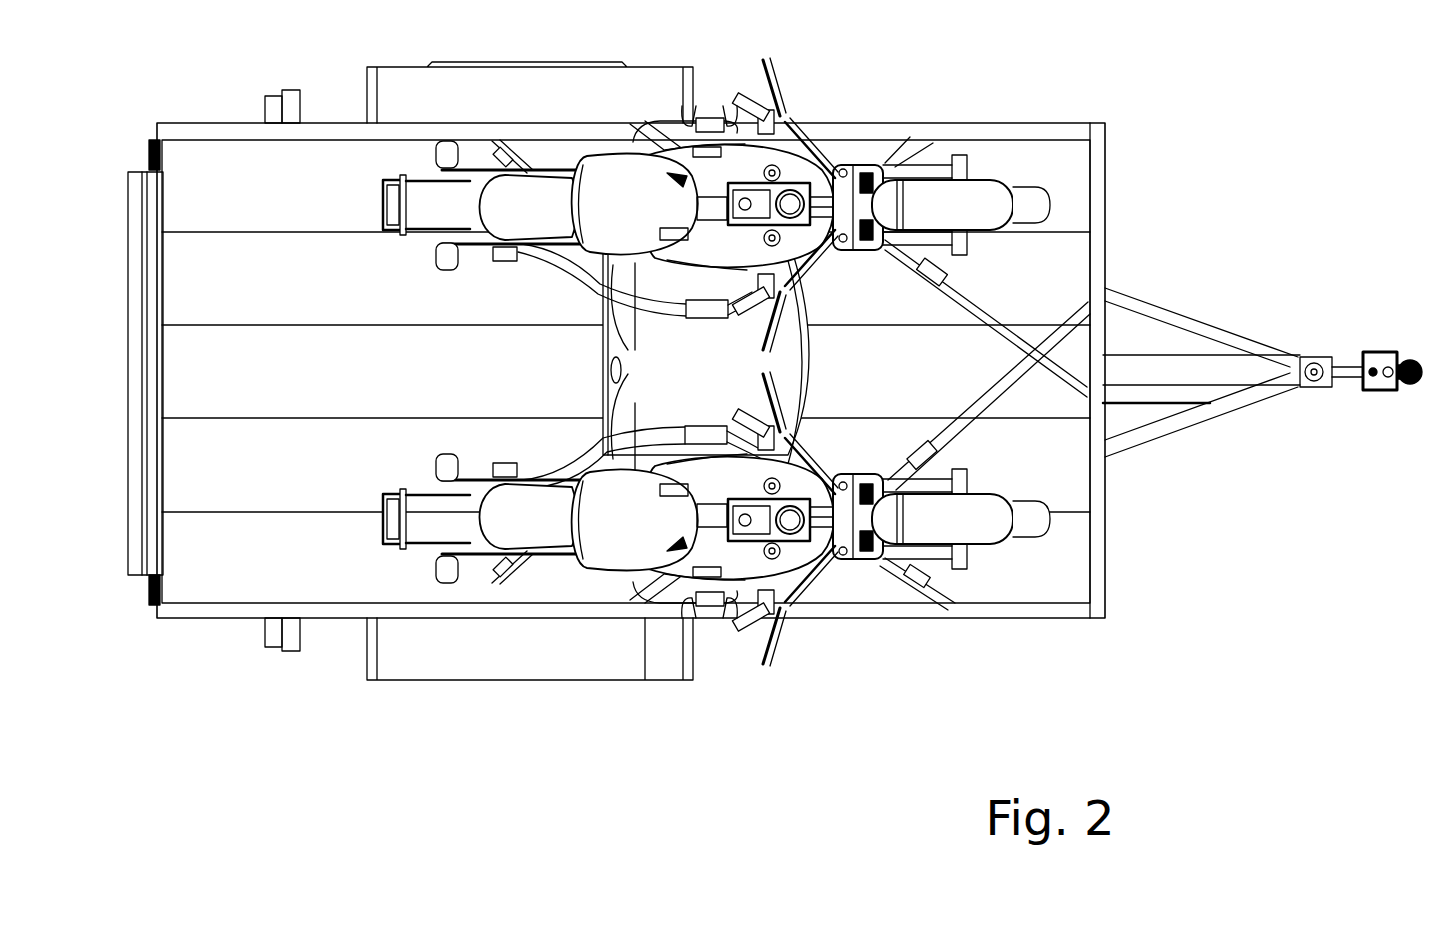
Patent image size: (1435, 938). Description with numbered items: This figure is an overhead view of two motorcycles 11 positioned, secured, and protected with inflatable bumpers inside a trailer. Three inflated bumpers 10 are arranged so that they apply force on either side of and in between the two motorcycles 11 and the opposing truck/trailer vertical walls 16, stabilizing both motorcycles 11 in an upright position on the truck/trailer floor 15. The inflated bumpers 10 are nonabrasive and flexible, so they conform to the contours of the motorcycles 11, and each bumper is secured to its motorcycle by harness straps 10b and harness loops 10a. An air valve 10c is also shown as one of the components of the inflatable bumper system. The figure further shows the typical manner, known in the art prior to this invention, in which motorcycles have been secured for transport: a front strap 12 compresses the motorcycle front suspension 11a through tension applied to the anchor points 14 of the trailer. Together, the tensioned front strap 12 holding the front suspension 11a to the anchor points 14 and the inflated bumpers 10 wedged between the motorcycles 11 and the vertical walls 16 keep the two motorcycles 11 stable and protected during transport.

The inflated bumper 10 is at (716, 574).
The harness loop 10a is at (710, 618).
The harness strap 10b is at (670, 555).
The air valve 10c is at (627, 580).
The motorcycle 11 is at (527, 537).
The front suspension 11a is at (905, 557).
The front strap 12 is at (997, 330).
The anchor point 14 is at (1093, 380).
The truck/trailer floor 15 is at (230, 558).
The truck/trailer vertical wall 16 is at (913, 133).